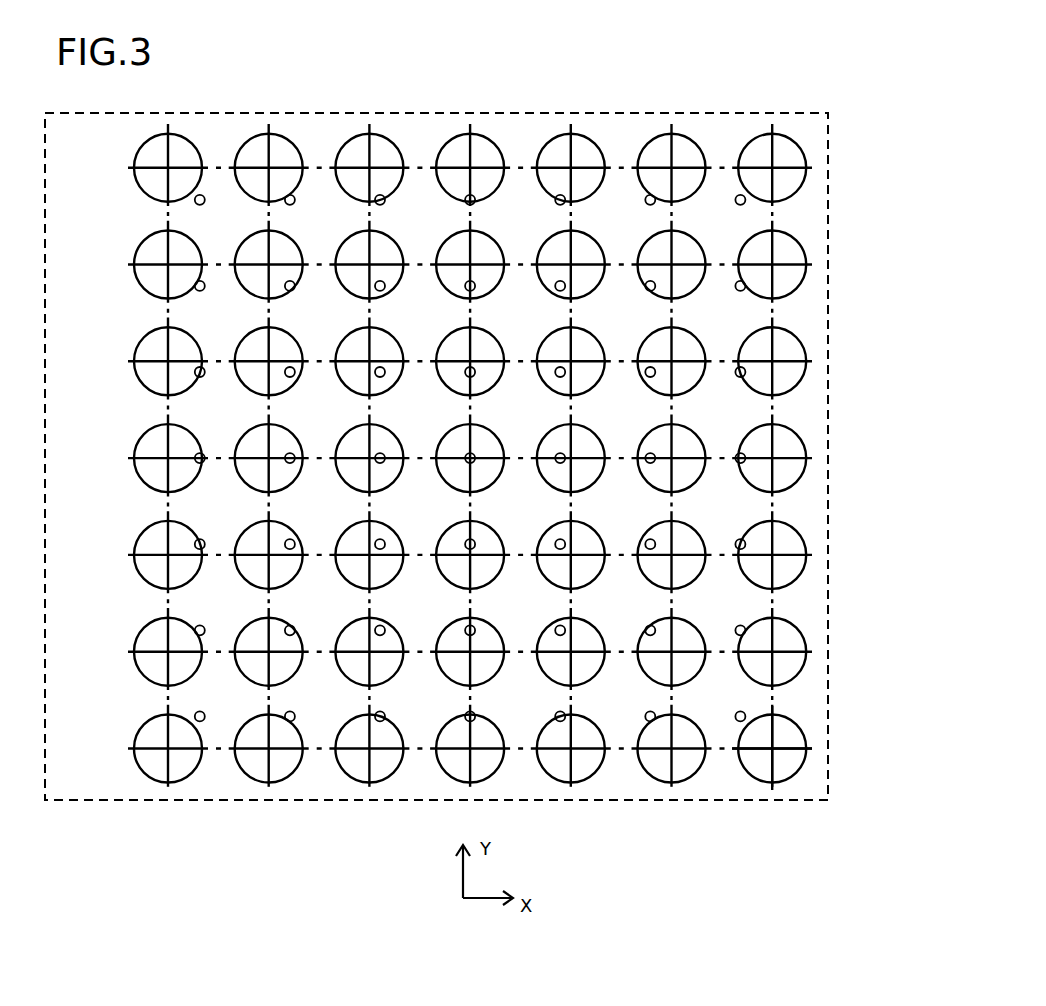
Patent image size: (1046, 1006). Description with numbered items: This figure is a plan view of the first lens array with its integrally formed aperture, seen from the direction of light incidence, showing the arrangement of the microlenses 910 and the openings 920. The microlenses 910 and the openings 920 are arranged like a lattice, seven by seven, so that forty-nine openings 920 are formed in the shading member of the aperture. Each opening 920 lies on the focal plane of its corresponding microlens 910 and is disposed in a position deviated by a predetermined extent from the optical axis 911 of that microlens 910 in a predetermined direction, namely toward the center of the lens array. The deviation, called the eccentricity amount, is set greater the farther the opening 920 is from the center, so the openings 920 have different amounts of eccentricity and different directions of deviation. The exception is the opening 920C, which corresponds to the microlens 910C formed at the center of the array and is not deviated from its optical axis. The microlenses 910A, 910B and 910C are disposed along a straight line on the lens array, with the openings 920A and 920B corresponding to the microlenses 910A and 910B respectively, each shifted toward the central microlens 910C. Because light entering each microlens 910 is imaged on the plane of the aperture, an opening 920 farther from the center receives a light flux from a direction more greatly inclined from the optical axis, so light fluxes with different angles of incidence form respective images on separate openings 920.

The microlens 910 is at (782, 778).
The optical axis 911 is at (772, 749).
The opening 920 is at (737, 721).
The microlens 910A is at (380, 487).
The microlens 910B is at (585, 487).
The microlens 910C is at (487, 487).
The opening 920A is at (384, 452).
The opening 920B is at (563, 452).
The opening 920C is at (474, 452).